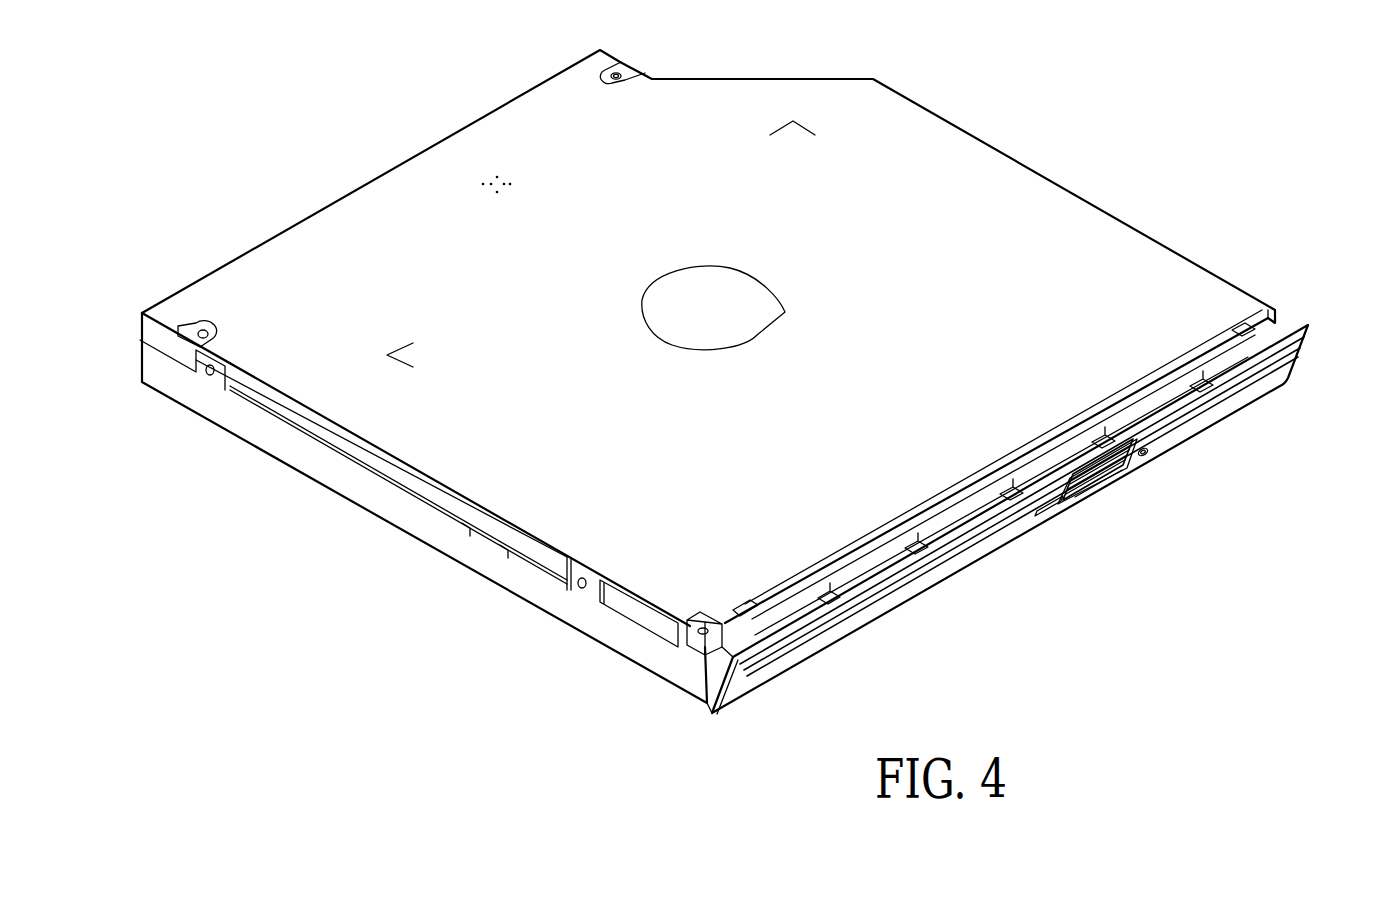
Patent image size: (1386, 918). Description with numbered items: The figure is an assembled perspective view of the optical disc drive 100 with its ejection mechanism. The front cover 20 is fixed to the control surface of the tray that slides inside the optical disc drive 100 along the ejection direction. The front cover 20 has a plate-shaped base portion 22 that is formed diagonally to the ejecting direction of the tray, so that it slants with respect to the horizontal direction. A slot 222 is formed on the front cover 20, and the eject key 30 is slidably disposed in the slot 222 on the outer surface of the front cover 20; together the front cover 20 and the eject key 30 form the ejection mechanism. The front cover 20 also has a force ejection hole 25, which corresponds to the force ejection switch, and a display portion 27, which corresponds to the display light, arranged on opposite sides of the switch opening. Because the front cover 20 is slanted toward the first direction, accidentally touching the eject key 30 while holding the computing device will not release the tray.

The optical disc drive 100 is at (1187, 69).
The front cover 20 is at (1283, 366).
The base portion 22 is at (1208, 410).
The slot 222 is at (1066, 487).
The force ejection hole 25 is at (1147, 456).
The display portion 27 is at (1052, 510).
The eject key 30 is at (1102, 477).